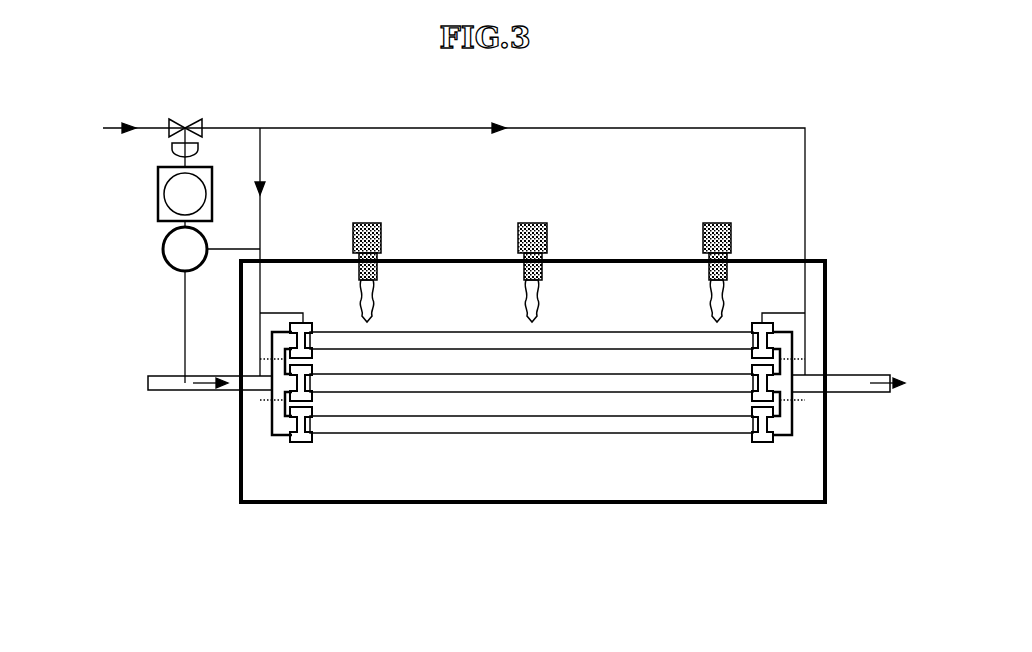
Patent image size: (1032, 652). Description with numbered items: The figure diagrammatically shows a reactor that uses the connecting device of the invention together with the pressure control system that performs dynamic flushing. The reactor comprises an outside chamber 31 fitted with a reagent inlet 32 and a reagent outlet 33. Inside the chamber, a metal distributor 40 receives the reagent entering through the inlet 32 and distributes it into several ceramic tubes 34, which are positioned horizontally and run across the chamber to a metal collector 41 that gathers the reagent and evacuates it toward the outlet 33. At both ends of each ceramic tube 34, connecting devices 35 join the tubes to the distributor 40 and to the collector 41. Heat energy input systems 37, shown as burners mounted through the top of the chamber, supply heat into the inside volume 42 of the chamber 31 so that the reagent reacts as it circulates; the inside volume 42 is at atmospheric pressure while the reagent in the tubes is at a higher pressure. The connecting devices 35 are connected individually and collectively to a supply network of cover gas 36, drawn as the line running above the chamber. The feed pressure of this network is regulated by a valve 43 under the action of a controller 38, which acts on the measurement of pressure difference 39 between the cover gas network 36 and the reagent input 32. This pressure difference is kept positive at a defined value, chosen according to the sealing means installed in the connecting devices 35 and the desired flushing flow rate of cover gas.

The outside chamber 31 is at (440, 505).
The reagent inlet 32 is at (170, 383).
The reagent outlet 33 is at (843, 386).
The ceramic tubes 34 is at (540, 423).
The connecting devices 35 is at (298, 440).
The supply network of cover gas 36 is at (360, 128).
The heat energy input systems 37 is at (528, 225).
The controller 38 is at (158, 192).
The measurement of pressure difference 39 is at (163, 249).
The distributor 40 is at (282, 382).
The collector 41 is at (797, 390).
The inside volume 42 is at (605, 292).
The valve 43 is at (188, 120).